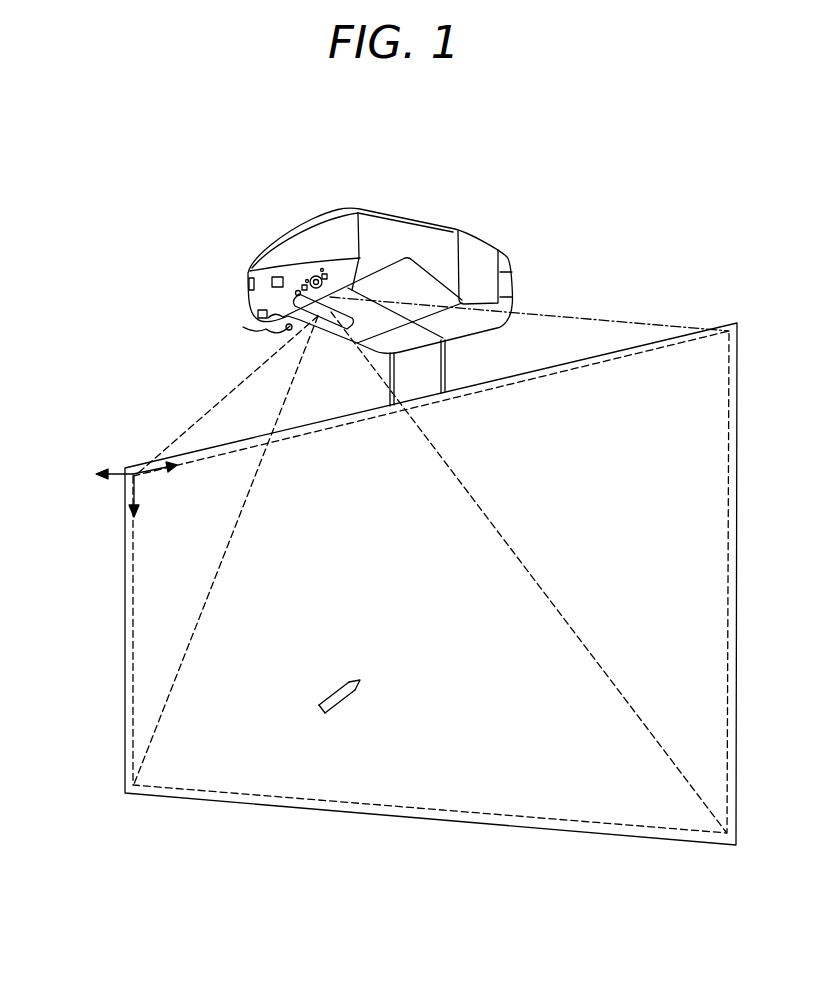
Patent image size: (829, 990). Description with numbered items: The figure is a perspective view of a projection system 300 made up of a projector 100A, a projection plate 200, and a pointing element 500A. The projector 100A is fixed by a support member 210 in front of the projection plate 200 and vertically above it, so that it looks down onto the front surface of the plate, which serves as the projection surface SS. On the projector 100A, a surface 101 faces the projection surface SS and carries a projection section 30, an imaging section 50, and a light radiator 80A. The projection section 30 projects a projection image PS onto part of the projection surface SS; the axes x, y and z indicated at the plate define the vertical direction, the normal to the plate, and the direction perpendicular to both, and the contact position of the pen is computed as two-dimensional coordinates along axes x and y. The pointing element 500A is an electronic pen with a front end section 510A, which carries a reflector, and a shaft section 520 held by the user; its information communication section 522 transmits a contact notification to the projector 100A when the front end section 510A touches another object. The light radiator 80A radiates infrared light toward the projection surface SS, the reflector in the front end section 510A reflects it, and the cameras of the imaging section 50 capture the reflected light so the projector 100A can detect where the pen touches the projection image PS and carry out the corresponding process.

The projection system 300 is at (106, 180).
The projector 100A is at (265, 267).
The surface 101 is at (313, 338).
The projection section 30 is at (272, 324).
The imaging section 50 is at (270, 336).
The light radiator 80A is at (272, 332).
The support member 210 is at (447, 360).
The projection plate 200 is at (127, 612).
The projection surface SS is at (128, 660).
The projection image PS is at (125, 705).
The pointing element 500A is at (443, 715).
The front end section 510A is at (354, 683).
The shaft section 520 is at (332, 706).
The information communication section 522 is at (327, 711).